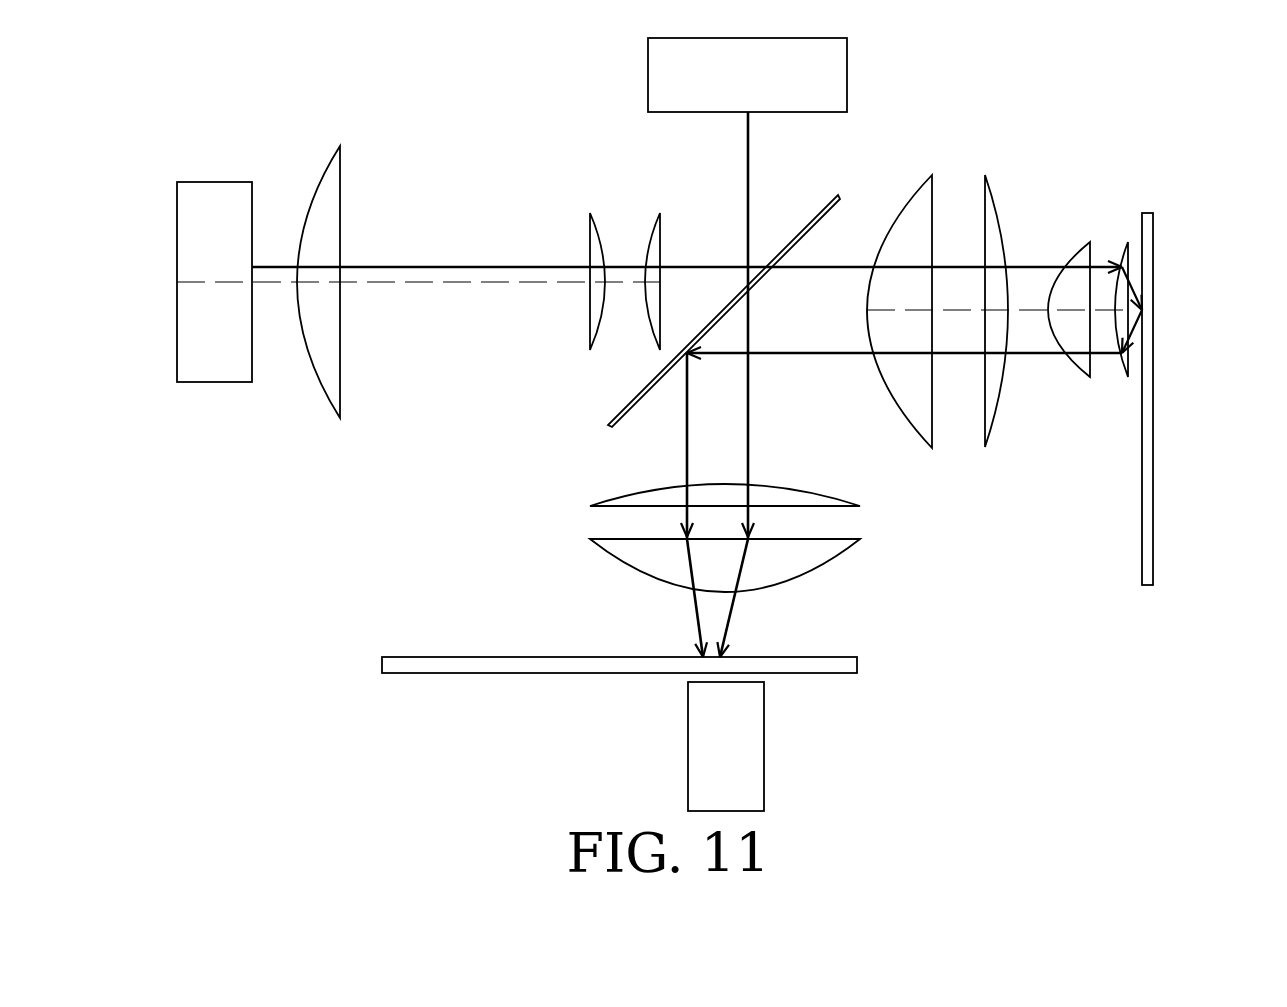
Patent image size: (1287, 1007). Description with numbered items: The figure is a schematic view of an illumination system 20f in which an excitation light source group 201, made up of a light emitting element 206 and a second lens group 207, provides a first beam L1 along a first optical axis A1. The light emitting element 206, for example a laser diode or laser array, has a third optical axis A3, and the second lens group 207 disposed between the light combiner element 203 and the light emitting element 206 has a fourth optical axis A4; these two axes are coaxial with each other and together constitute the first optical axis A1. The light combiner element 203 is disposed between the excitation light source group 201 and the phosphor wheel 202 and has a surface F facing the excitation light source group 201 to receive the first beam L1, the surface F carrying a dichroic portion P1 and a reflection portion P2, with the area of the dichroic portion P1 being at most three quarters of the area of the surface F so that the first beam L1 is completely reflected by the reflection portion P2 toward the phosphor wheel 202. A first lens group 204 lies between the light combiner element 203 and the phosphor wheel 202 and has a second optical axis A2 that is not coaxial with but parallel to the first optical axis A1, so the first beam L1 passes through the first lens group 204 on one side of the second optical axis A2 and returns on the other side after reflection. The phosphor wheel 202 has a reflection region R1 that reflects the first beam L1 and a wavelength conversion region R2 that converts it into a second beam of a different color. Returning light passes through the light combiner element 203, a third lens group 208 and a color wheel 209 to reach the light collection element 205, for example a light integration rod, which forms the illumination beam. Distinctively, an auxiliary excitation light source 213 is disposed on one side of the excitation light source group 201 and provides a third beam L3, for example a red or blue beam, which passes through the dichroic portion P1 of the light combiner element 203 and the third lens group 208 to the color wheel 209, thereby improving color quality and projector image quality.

The illumination system 20f is at (132, 127).
The excitation light source group 201 is at (503, 86).
The light emitting element 206 is at (228, 193).
The second lens group 207 is at (660, 134).
The auxiliary excitation light source 213 is at (818, 60).
The light combiner element 203 is at (838, 196).
The first lens group 204 is at (1128, 146).
The phosphor wheel 202 is at (1155, 565).
The third lens group 208 is at (888, 482).
The color wheel 209 is at (418, 666).
The light collection element 205 is at (737, 752).
The first beam L1 is at (497, 262).
The third beam L3 is at (745, 178).
The surface F is at (788, 243).
The dichroic portion P1 is at (810, 225).
The reflection portion P2 is at (618, 405).
The reflection region R1 is at (1130, 217).
The wavelength conversion region R2 is at (1141, 545).
The first optical axis A1 is at (433, 462).
The second optical axis A2 is at (1033, 307).
The third optical axis A3 is at (228, 282).
The fourth optical axis A4 is at (443, 282).